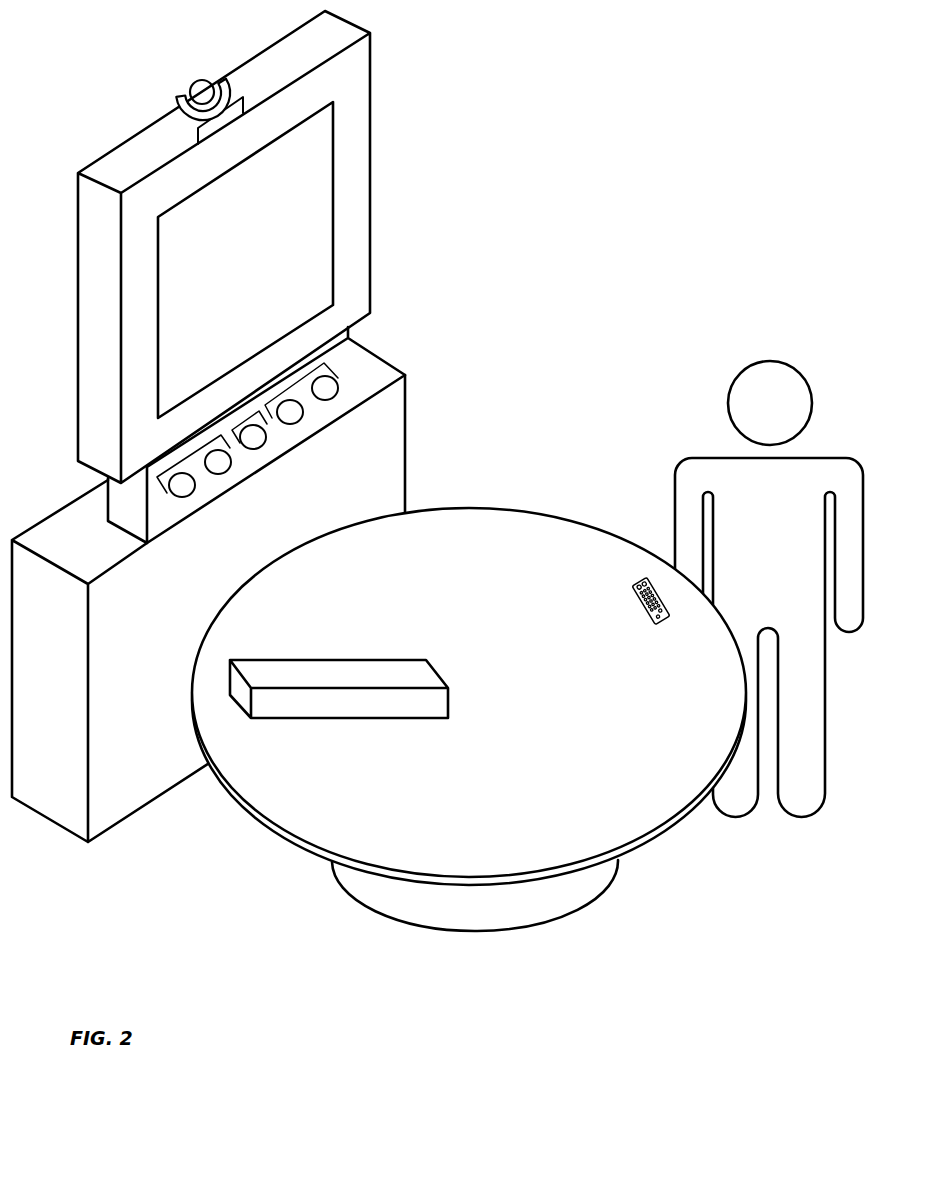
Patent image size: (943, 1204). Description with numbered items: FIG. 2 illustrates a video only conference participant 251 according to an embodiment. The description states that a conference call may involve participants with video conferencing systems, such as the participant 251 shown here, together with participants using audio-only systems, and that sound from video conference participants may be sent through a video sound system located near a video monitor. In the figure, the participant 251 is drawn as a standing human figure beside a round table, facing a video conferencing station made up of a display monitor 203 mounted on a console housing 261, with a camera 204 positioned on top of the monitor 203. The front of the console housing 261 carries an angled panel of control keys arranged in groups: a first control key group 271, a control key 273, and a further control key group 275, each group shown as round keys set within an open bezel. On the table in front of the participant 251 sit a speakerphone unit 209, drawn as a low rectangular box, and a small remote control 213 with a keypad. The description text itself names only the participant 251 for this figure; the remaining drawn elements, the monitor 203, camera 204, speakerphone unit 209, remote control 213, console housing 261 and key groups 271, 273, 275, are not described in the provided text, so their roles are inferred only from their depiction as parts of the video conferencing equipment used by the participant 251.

The display monitor 203 is at (315, 190).
The camera 204 is at (175, 97).
The speakerphone unit 209 is at (284, 674).
The remote control 213 is at (654, 626).
The participant 251 is at (762, 392).
The console housing 261 is at (338, 407).
The control key group 271 is at (188, 455).
The control key 273 is at (242, 420).
The control key group 275 is at (293, 382).